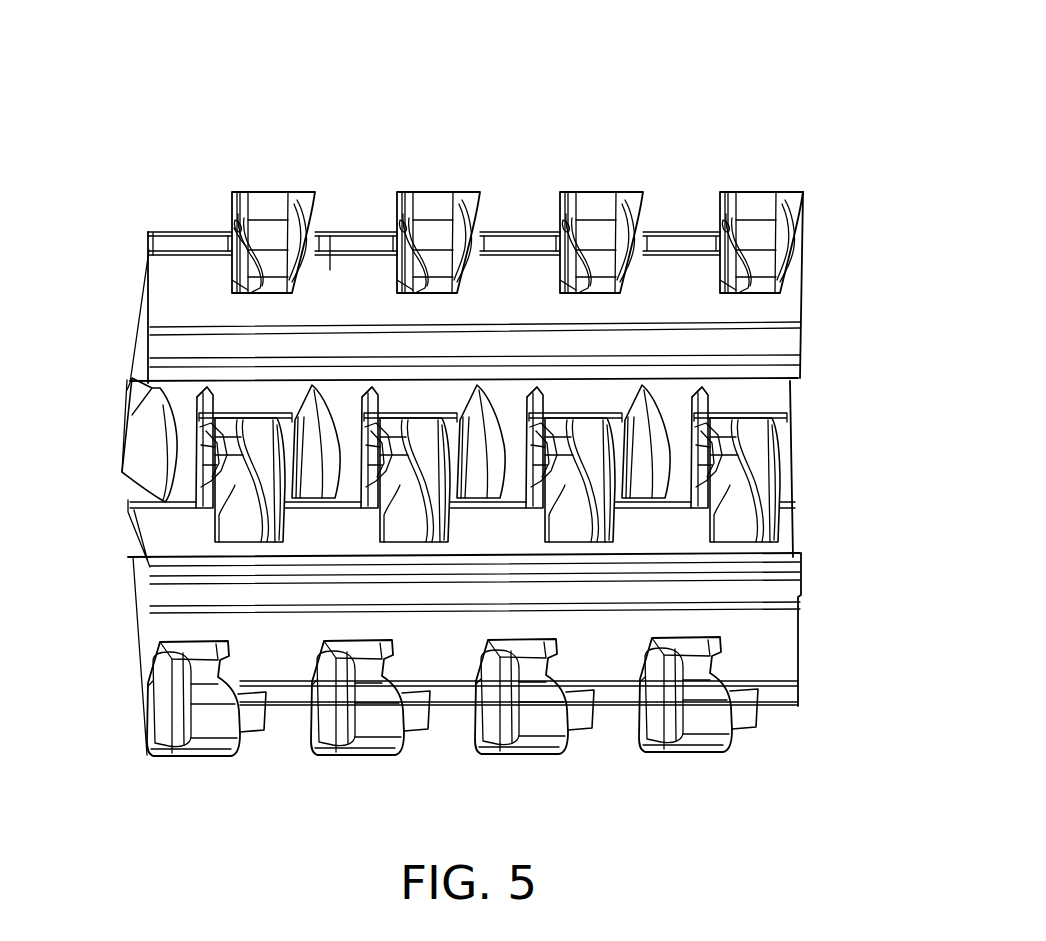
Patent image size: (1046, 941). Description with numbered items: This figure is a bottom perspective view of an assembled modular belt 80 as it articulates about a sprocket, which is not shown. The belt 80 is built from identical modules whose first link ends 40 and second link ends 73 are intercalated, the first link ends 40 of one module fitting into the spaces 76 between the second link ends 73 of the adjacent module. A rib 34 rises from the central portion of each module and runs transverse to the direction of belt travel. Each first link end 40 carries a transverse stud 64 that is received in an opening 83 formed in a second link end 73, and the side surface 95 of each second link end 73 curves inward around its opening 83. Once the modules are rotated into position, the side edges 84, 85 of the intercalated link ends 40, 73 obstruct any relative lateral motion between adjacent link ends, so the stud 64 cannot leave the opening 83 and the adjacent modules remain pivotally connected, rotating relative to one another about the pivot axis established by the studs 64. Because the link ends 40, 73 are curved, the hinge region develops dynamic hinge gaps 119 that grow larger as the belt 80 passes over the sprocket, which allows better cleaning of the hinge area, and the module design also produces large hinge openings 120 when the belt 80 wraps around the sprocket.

The belt 80 is at (682, 77).
The rib 34 is at (165, 345).
The second plurality of link ends 73 is at (264, 200).
The side edge 84 is at (320, 247).
The side surface 95 is at (345, 245).
The opening 83 is at (234, 240).
The space 76 is at (724, 188).
The side edge 85 is at (440, 412).
The dynamic hinge gap 119 is at (215, 458).
The hinge opening 120 is at (309, 492).
The first plurality of link ends 40 is at (205, 758).
The stud 64 is at (252, 740).